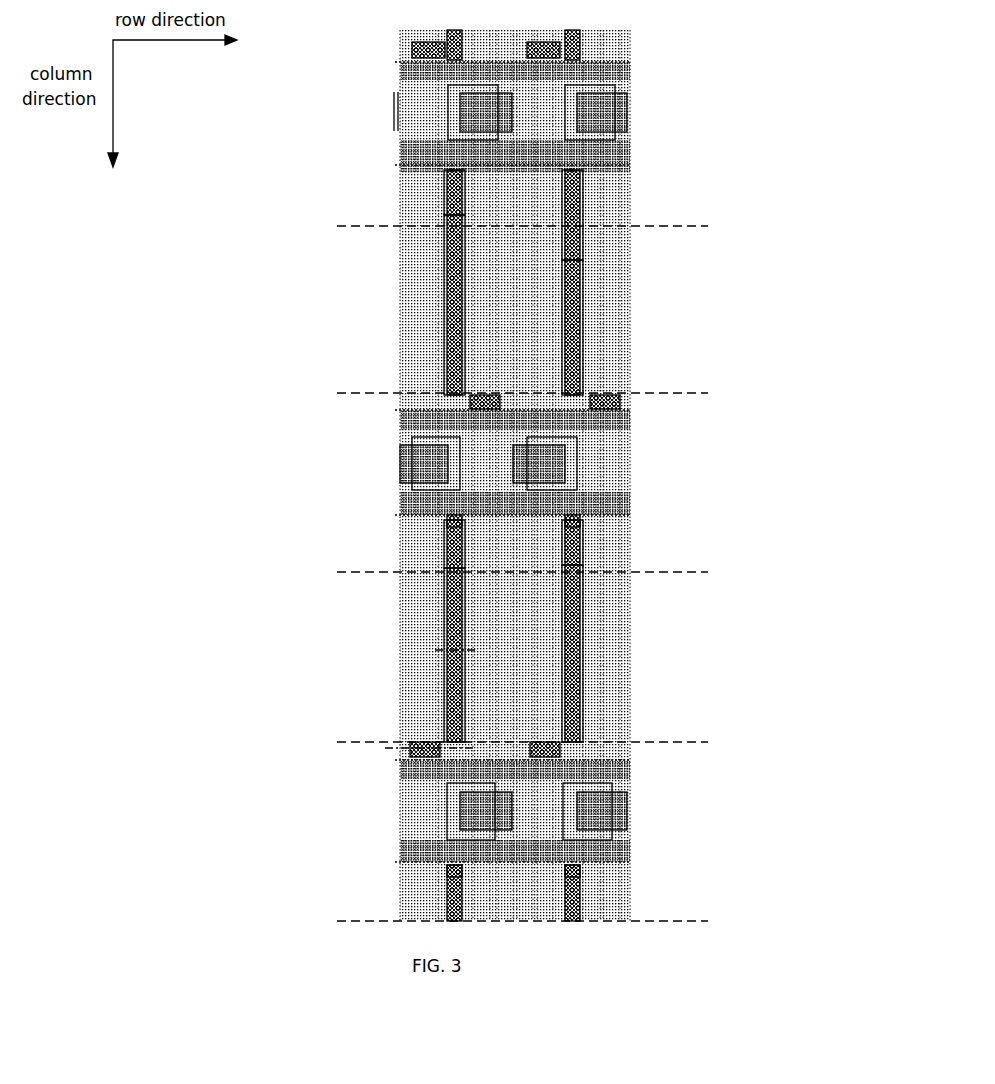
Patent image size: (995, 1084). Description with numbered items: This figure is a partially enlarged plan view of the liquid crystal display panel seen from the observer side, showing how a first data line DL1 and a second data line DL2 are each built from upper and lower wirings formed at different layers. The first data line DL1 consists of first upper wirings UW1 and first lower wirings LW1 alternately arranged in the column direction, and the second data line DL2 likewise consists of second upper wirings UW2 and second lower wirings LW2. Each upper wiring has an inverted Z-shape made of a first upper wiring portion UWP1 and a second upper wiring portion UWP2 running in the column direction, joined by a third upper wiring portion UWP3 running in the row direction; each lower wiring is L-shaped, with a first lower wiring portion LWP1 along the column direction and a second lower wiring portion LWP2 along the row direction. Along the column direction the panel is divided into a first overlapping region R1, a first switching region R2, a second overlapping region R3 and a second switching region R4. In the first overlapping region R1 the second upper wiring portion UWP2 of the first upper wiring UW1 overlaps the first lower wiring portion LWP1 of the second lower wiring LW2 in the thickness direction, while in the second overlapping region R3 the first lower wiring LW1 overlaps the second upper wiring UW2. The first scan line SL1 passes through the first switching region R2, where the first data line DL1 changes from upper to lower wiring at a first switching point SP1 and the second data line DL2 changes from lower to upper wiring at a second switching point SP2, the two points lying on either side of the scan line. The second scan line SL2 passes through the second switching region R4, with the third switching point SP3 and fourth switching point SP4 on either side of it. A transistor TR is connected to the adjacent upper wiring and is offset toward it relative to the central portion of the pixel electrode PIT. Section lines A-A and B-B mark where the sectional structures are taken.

The second scan line SL2 is at (410, 65).
The first scan line SL1 is at (420, 412).
The first data line DL1 is at (400, 105).
The second data line DL2 is at (625, 123).
The pixel electrode PIT is at (625, 163).
The first upper wiring UW1 is at (447, 267).
The second upper wiring UW2 is at (580, 614).
The first lower wiring LW1 is at (447, 613).
The second lower wiring LW2 is at (580, 305).
The first upper wiring portion UWP1 is at (410, 178).
The second upper wiring portion UWP2 is at (450, 292).
The third upper wiring portion UWP3 is at (435, 212).
The first lower wiring portion LWP1 is at (580, 345).
The second lower wiring portion LWP2 is at (596, 389).
The first switching point SP1 is at (438, 520).
The second switching point SP2 is at (605, 402).
The third switching point SP3 is at (400, 738).
The fourth switching point SP4 is at (583, 867).
The transistor TR is at (527, 468).
The first overlapping region R1 is at (522, 309).
The first switching region R2 is at (522, 525).
The second overlapping region R3 is at (522, 692).
The second switching region R4 is at (522, 875).
The A-A section line A-A is at (392, 743).
The B-B section line B-B is at (437, 649).